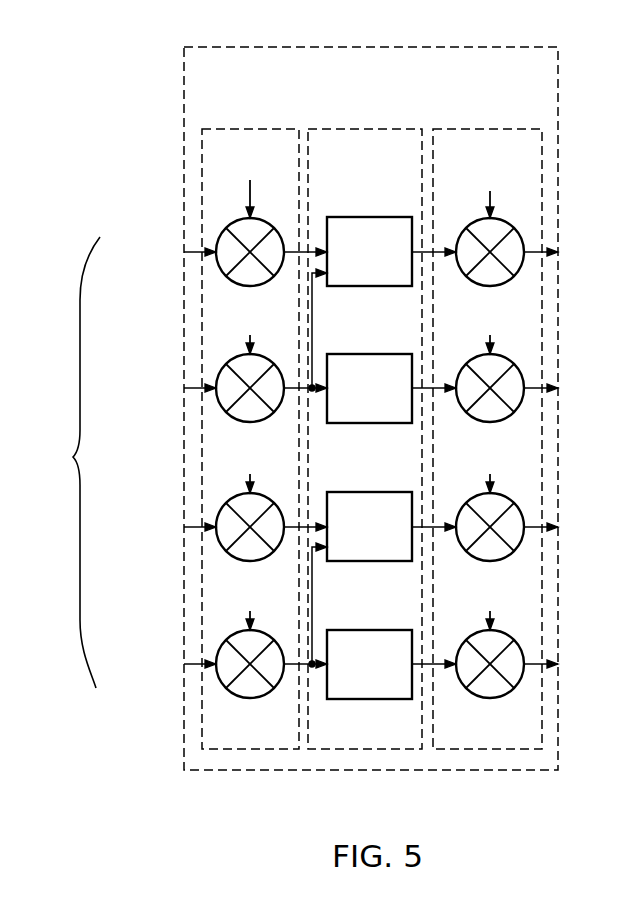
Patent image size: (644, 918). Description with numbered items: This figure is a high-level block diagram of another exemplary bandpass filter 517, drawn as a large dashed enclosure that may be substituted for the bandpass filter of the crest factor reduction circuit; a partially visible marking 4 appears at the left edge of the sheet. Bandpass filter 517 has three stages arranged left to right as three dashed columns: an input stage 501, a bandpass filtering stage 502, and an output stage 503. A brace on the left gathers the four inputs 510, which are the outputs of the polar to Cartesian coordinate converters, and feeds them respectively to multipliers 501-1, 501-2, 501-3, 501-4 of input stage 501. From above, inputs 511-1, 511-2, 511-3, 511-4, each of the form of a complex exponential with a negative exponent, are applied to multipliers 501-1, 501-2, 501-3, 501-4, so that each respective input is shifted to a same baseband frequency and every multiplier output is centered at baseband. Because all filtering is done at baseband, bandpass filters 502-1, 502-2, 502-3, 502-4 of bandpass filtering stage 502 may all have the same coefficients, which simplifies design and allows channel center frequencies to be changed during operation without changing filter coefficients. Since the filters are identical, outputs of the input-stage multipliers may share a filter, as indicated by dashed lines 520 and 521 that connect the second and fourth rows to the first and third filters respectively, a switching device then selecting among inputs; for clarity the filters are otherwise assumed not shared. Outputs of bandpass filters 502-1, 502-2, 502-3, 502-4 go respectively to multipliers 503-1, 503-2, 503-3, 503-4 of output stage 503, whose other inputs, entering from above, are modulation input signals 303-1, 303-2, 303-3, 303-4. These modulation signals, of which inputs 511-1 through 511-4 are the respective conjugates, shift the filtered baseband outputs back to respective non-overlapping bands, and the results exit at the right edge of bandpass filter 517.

The partial numeral (cut off) 4 is at (11, 60).
The bandpass filter 517 is at (560, 100).
The inputs 510 is at (50, 469).
The input stage 501 is at (275, 95).
The bandpass filtering stage 502 is at (350, 129).
The output stage 503 is at (462, 129).
The multiplier 501-1 is at (232, 224).
The multiplier 501-2 is at (232, 360).
The multiplier 501-3 is at (232, 499).
The multiplier 501-4 is at (232, 636).
The input 511-1 is at (289, 180).
The input 511-2 is at (291, 335).
The input 511-3 is at (291, 474).
The input 511-4 is at (293, 611).
The bandpass filter 502-1 is at (395, 261).
The bandpass filter 502-2 is at (395, 397).
The bandpass filter 502-3 is at (395, 536).
The bandpass filter 502-4 is at (395, 673).
The multiplier 503-1 is at (470, 224).
The multiplier 503-2 is at (470, 360).
The multiplier 503-3 is at (470, 499).
The multiplier 503-4 is at (470, 636).
The modulation input signal 303-1 is at (534, 191).
The modulation input signal 303-2 is at (534, 335).
The modulation input signal 303-3 is at (534, 474).
The modulation input signal 303-4 is at (534, 611).
The dashed line 520 is at (379, 327).
The dashed line 521 is at (313, 585).